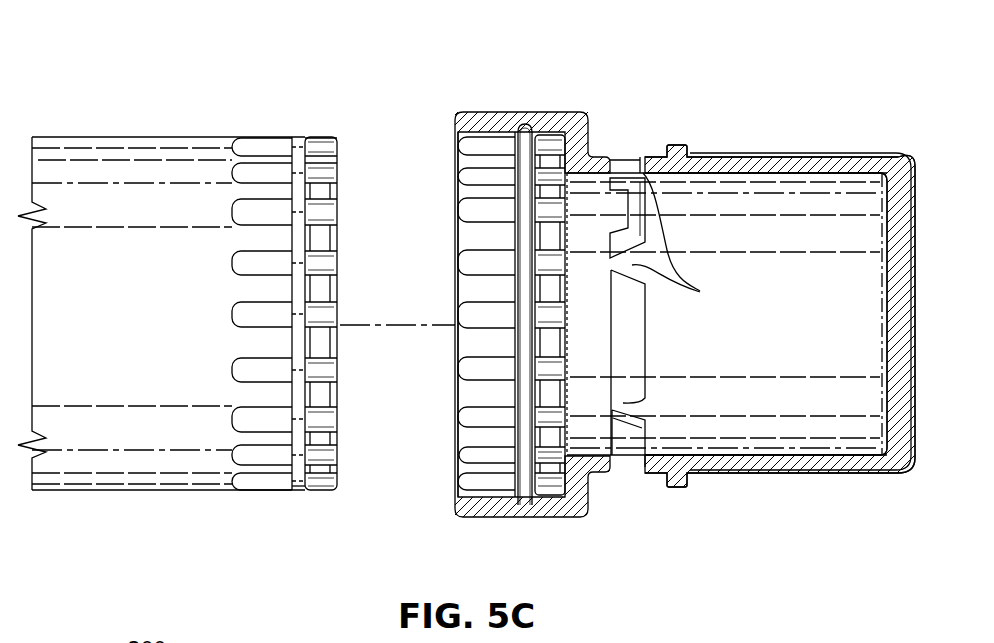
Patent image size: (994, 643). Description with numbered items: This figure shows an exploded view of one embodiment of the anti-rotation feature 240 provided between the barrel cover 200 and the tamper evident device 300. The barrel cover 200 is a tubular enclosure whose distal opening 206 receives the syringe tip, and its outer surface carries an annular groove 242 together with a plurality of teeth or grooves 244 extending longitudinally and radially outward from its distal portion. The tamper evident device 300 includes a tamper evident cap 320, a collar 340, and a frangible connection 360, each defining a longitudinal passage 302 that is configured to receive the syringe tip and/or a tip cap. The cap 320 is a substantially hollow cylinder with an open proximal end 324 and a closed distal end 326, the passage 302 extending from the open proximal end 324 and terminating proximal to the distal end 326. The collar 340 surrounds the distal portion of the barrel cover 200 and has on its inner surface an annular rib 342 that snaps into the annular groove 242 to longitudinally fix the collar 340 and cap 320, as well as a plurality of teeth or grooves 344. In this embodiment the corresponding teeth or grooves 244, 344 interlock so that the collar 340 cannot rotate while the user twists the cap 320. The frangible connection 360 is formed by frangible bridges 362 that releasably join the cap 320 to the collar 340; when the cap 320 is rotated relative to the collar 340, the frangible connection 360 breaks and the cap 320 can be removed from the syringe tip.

The barrel cover 200 is at (112, 136).
The anti-rotation feature 240 is at (286, 295).
The annular groove 242 is at (298, 492).
The teeth or grooves 244 is at (238, 477).
The distal opening 206 is at (337, 443).
The collar 340 is at (487, 271).
The annular rib 342 is at (530, 134).
The teeth or grooves 344 is at (480, 415).
The frangible connection 360 is at (727, 248).
The frangible bridges 362 is at (623, 403).
The tamper evident device 300 is at (775, 299).
The tamper evident cap 320 is at (889, 134).
The longitudinal passage 302 is at (758, 390).
The closed distal end 326 is at (903, 395).
The open proximal end 324 is at (650, 400).